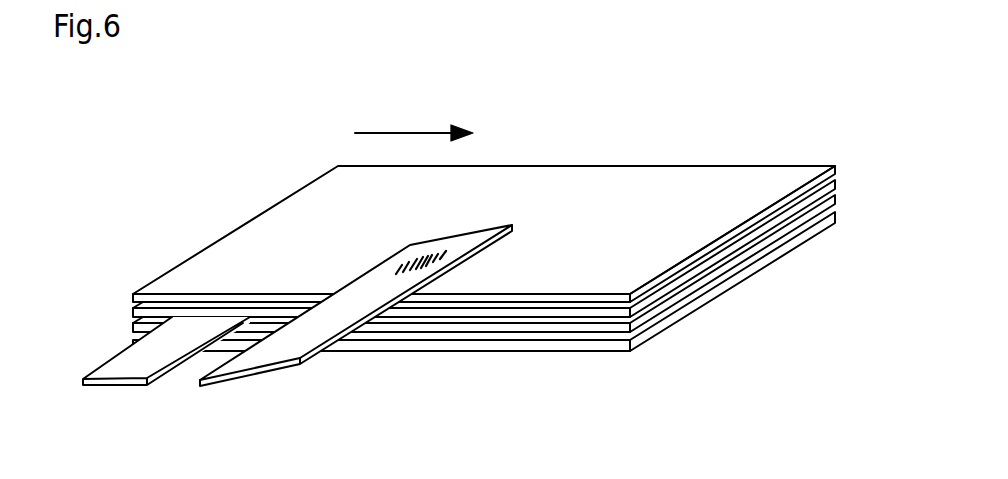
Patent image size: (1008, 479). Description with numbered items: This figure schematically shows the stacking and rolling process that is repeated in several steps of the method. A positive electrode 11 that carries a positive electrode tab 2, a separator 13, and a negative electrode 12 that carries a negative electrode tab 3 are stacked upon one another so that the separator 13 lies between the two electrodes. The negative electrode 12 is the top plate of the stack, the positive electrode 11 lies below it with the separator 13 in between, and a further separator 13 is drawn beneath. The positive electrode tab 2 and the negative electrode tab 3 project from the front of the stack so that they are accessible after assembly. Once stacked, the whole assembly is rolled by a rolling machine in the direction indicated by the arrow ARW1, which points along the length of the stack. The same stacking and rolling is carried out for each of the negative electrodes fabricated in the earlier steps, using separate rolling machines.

The positive electrode tab 2 is at (117, 357).
The negative electrode tab 3 is at (302, 359).
The positive electrode 11 is at (836, 199).
The negative electrode 12 is at (836, 168).
The separator 13 is at (836, 184).
The arrow ARW1 is at (414, 122).